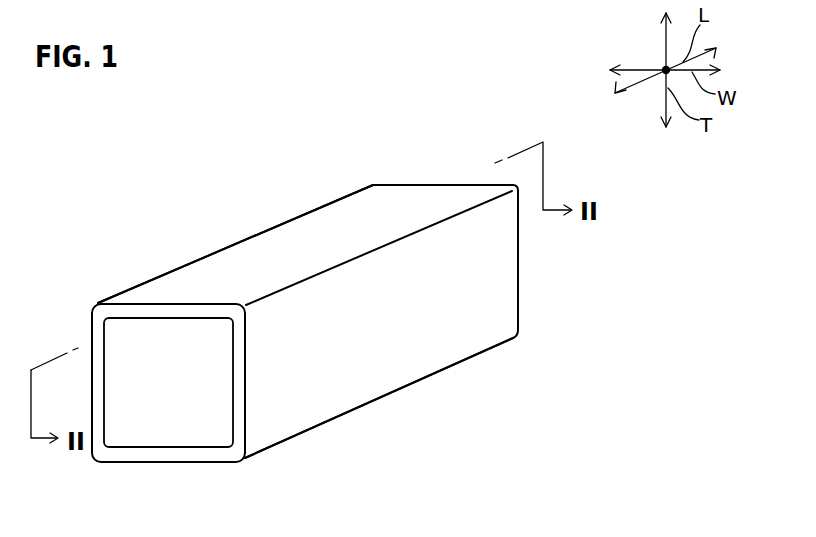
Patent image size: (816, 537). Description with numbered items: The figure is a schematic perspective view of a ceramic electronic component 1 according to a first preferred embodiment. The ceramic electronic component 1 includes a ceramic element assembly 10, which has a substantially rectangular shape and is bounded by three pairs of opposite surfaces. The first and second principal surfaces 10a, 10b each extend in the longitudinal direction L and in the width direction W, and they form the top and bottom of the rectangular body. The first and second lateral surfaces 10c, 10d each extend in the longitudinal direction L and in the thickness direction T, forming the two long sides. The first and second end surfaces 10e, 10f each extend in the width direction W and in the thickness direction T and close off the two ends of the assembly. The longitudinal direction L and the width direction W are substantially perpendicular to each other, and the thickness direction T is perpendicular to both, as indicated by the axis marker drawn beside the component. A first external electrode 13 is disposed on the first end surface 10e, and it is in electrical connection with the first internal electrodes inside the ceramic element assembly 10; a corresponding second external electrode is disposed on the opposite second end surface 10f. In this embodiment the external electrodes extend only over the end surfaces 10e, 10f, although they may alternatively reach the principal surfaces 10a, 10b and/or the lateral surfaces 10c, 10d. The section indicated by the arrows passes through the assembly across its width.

The ceramic electronic component 1 is at (410, 137).
The ceramic element assembly 10 is at (297, 204).
The first principal surface 10a is at (248, 260).
The second principal surface 10b is at (362, 408).
The first lateral surface 10c is at (158, 278).
The second lateral surface 10d is at (445, 350).
The first end surface 10e is at (237, 412).
The second end surface 10f is at (520, 283).
The first external electrode 13 is at (182, 432).